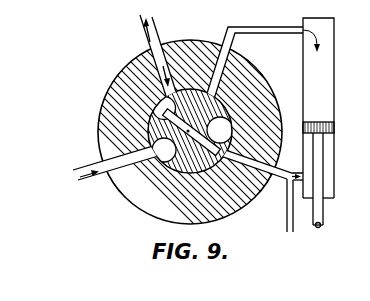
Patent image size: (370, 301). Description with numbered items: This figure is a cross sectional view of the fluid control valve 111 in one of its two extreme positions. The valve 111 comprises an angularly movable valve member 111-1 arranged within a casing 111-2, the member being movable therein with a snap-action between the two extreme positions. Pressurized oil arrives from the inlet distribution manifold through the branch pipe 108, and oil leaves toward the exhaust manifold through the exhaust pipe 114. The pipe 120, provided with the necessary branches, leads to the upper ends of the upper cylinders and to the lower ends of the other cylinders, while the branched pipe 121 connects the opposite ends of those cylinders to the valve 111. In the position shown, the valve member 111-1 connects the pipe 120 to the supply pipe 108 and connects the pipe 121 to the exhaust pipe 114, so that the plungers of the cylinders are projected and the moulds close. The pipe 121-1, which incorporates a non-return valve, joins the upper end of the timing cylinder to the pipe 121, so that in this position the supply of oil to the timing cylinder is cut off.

The branch pipe 108 is at (95, 182).
The control valve 111 is at (97, 122).
The angularly movable valve member 111-1 is at (130, 202).
The casing 111-2 is at (117, 86).
The exhaust pipe 114 is at (157, 34).
The pipe 120 is at (257, 27).
The branched pipe 121 is at (278, 178).
The pipe 121-1 is at (286, 229).